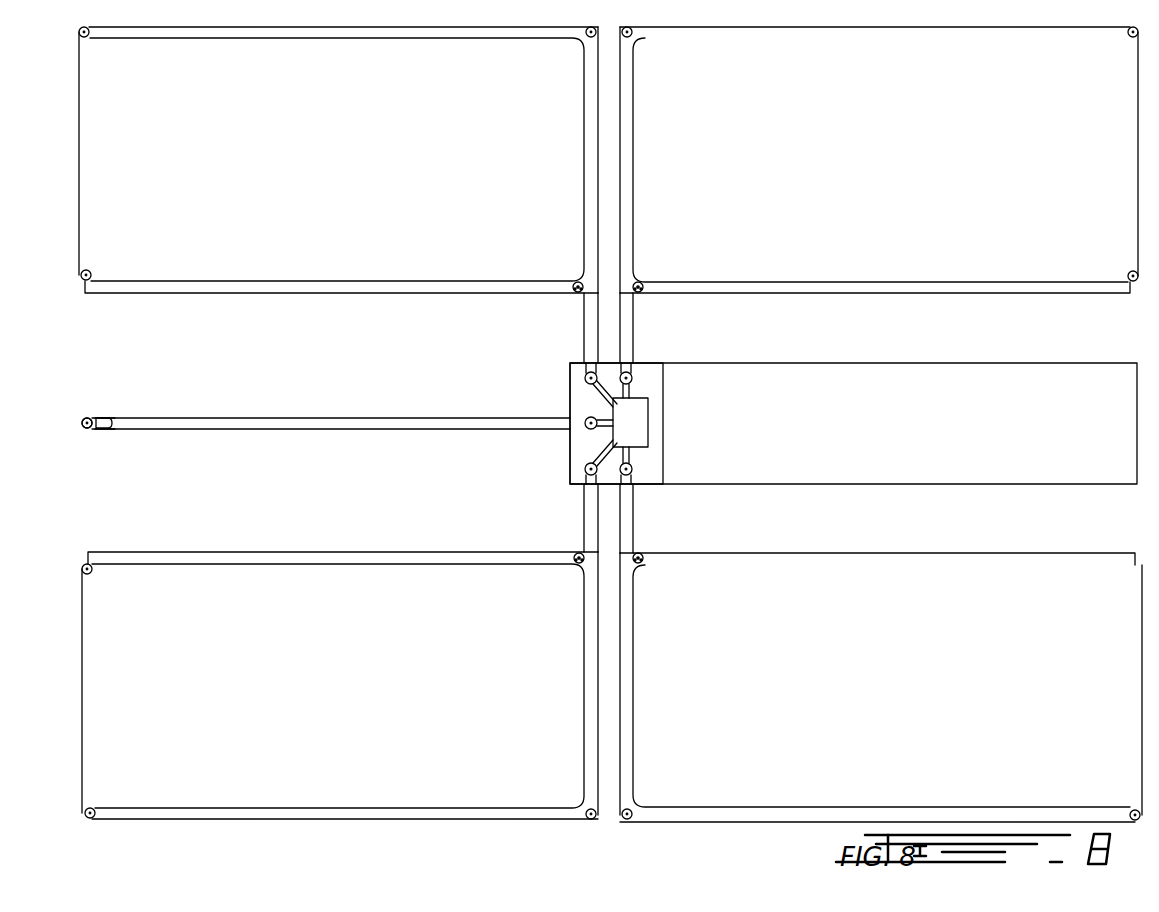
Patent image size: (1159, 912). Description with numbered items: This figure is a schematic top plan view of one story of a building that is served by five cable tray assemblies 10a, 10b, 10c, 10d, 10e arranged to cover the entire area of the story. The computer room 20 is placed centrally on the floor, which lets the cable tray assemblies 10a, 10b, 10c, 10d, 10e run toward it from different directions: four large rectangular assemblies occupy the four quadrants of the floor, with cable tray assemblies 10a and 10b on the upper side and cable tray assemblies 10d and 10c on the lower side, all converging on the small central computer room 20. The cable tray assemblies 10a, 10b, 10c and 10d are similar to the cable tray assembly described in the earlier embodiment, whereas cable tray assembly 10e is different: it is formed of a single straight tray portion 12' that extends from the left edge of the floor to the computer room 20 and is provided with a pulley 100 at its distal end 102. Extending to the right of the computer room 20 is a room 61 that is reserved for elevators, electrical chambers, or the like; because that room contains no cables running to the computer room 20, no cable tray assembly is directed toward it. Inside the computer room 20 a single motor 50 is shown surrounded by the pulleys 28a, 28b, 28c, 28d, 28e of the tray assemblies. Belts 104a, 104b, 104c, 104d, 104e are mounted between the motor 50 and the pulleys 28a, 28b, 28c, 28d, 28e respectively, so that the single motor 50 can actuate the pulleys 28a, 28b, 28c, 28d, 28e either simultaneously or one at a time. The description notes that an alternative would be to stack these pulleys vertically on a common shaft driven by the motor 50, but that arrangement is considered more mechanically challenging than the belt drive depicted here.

The cable tray assembly 10a is at (272, 299).
The cable tray assembly 10b is at (954, 300).
The cable tray assembly 10c is at (1007, 554).
The cable tray assembly 10d is at (310, 552).
The cable tray assembly 10e is at (344, 430).
The single straight tray portion 12' is at (326, 391).
The pulley 100 is at (102, 417).
The distal end 102 is at (80, 430).
The computer room 20 is at (664, 455).
The motor 50 is at (649, 418).
The room 61 is at (898, 455).
The pulley 28a is at (586, 371).
The pulley 28b is at (636, 362).
The pulley 28c is at (634, 481).
The pulley 28d is at (586, 478).
The pulley 28e is at (584, 420).
The belt 104a is at (598, 392).
The belt 104b is at (634, 392).
The belt 104c is at (633, 456).
The belt 104d is at (592, 462).
The belt 104e is at (596, 432).